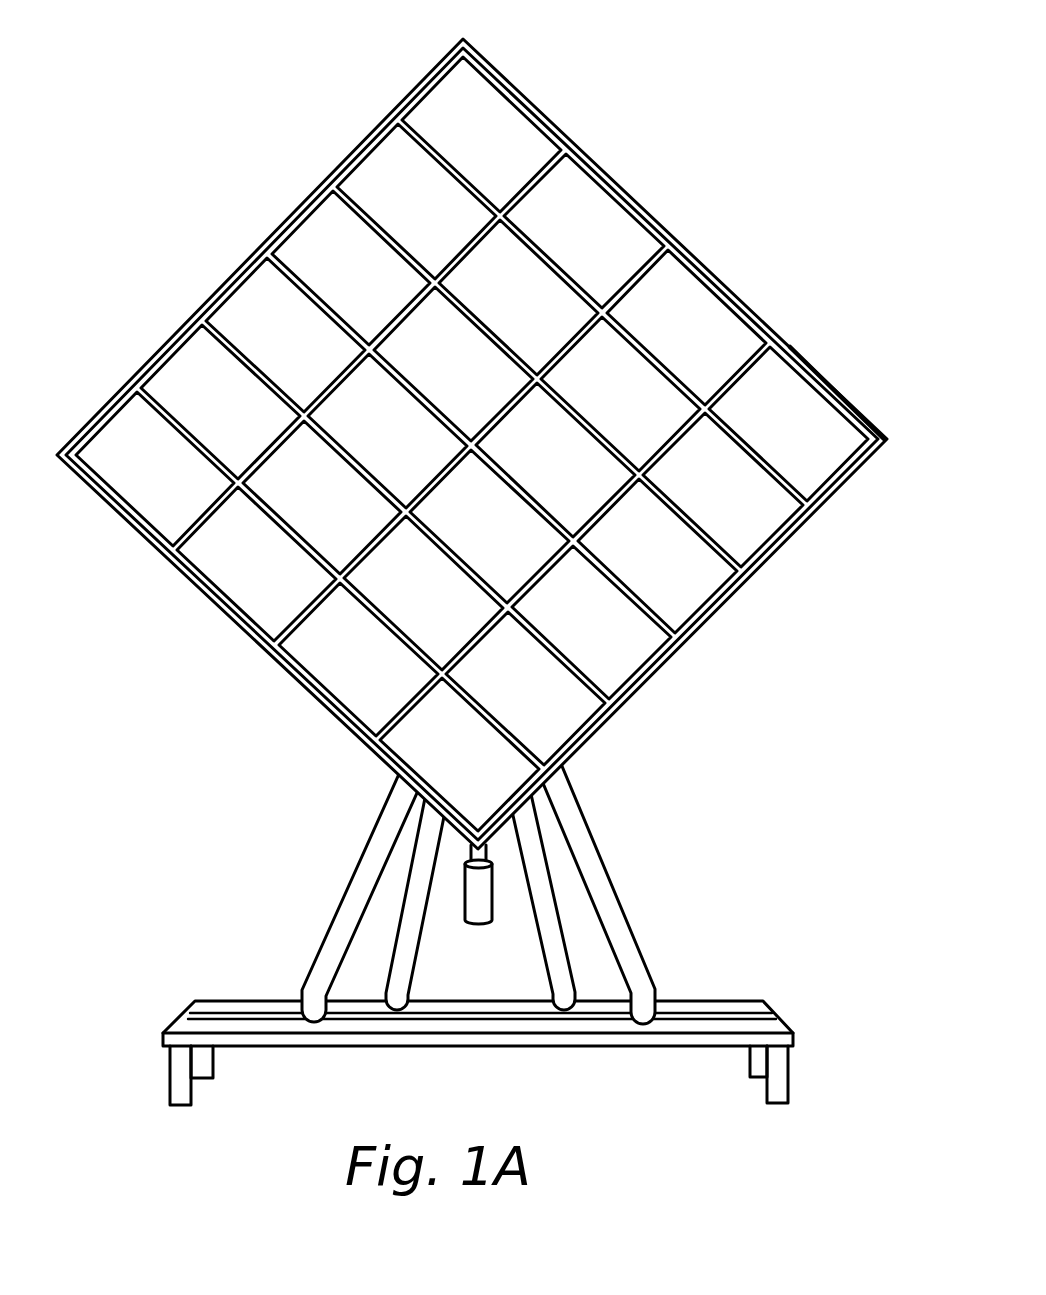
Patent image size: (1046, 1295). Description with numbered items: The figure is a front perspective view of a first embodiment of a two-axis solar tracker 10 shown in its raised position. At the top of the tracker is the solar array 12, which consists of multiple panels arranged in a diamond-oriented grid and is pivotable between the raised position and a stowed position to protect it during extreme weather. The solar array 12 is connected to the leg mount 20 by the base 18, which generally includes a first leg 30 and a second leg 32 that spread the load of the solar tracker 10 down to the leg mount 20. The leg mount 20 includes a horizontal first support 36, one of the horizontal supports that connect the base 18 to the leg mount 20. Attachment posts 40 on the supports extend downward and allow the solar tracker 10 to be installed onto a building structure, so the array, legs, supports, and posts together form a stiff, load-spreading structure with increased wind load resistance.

The two-axis solar tracker 10 is at (472, 427).
The solar array 12 is at (603, 220).
The base 18 is at (494, 879).
The leg mount 20 is at (793, 1022).
The first leg 30 is at (348, 914).
The second leg 32 is at (577, 851).
The first support 36 is at (668, 1040).
The attachment posts 40 is at (170, 1066).